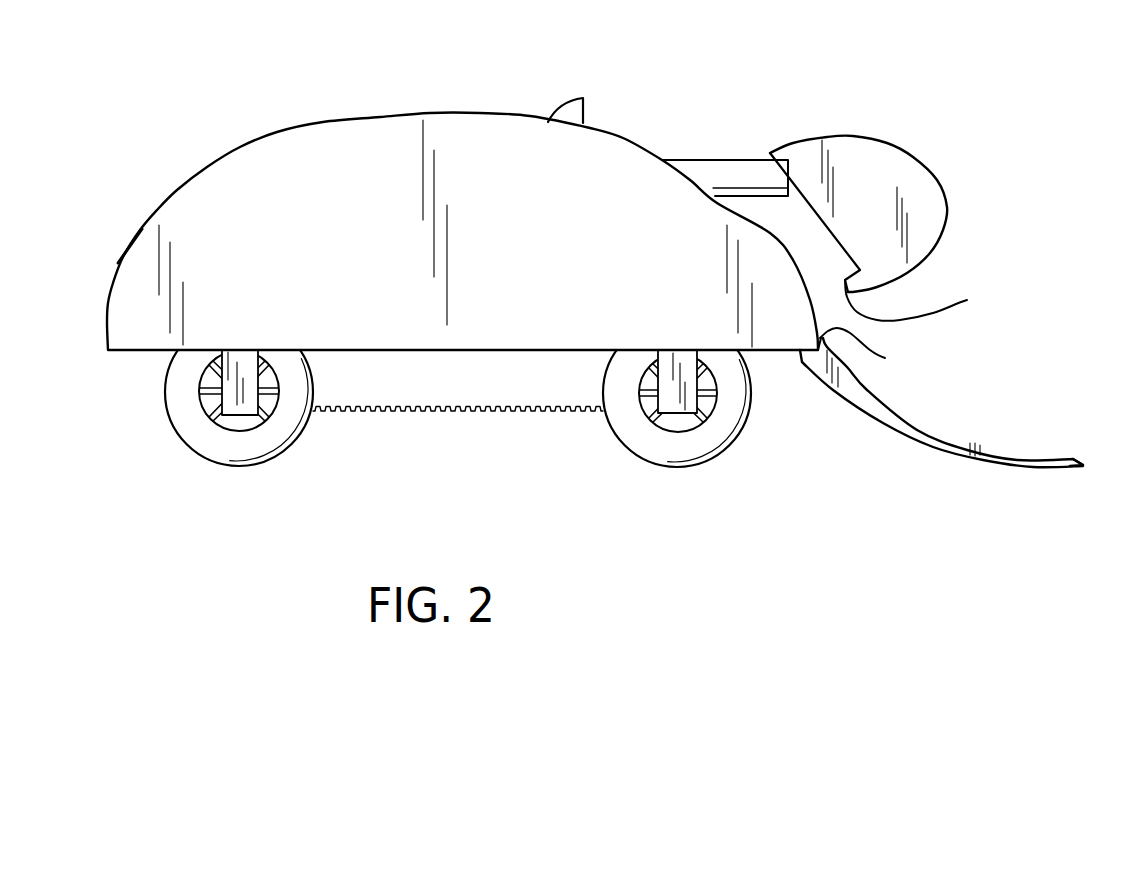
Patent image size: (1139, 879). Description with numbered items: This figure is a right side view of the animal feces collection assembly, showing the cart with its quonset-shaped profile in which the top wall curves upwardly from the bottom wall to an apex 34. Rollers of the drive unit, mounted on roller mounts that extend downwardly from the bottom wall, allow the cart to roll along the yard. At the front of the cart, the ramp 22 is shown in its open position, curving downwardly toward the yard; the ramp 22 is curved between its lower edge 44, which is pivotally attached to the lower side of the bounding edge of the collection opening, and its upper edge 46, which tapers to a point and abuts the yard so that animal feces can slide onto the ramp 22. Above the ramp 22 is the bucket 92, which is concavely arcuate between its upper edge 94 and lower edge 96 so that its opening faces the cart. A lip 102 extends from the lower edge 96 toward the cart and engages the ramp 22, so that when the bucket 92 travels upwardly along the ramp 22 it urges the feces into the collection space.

The ramp 22 is at (933, 447).
The apex 34 is at (409, 82).
The lower edge 44 is at (885, 358).
The upper edge 46 is at (1083, 465).
The bucket 92 is at (900, 148).
The upper edge 94 is at (772, 153).
The lower edge 96 is at (745, 194).
The lip 102 is at (967, 300).